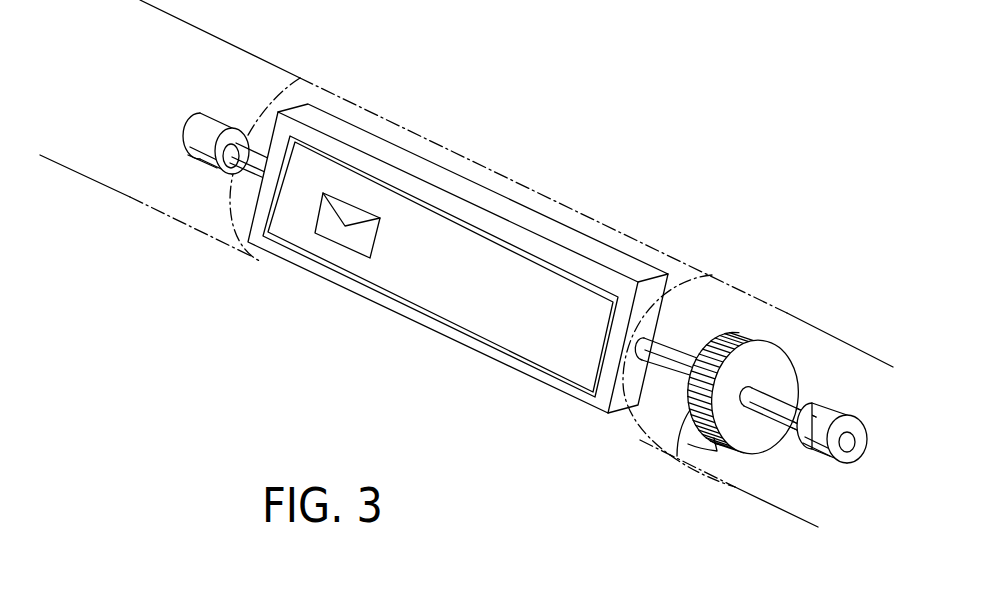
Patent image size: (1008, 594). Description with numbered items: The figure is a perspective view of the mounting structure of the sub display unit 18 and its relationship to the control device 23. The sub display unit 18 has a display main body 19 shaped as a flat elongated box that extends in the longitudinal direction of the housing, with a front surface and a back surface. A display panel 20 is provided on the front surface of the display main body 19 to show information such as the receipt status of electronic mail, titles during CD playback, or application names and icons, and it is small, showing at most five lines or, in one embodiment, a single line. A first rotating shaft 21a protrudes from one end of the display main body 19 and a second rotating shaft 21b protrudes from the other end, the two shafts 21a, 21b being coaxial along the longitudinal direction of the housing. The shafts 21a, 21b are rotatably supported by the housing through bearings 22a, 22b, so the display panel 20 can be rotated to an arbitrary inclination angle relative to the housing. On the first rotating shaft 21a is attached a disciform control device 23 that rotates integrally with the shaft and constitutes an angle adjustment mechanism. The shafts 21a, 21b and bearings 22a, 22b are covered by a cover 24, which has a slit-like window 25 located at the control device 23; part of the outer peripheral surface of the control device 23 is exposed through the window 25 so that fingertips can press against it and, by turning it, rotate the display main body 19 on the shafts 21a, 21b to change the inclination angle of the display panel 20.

The sub display unit 18 is at (357, 297).
The display main body 19 is at (548, 227).
The display panel 20 is at (447, 312).
The first rotating shaft 21a is at (663, 342).
The second rotating shaft 21b is at (250, 172).
The bearing 22a is at (830, 411).
The bearing 22b is at (218, 119).
The control device 23 is at (698, 438).
The cover 24 is at (797, 322).
The window 25 is at (706, 454).